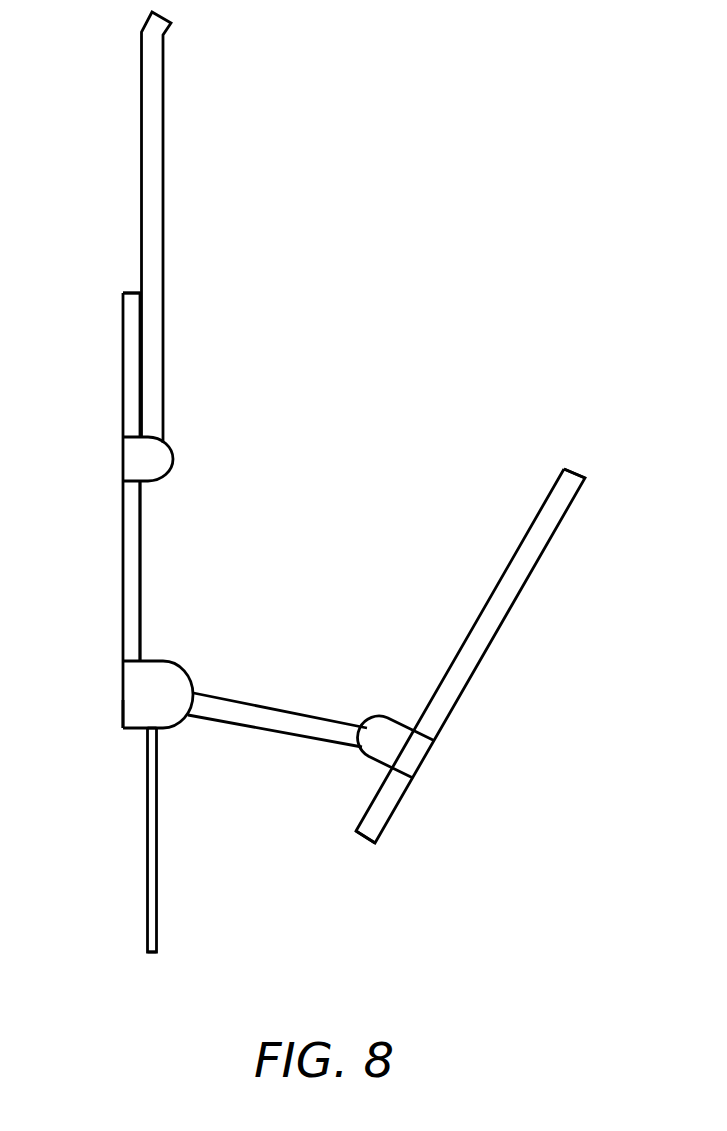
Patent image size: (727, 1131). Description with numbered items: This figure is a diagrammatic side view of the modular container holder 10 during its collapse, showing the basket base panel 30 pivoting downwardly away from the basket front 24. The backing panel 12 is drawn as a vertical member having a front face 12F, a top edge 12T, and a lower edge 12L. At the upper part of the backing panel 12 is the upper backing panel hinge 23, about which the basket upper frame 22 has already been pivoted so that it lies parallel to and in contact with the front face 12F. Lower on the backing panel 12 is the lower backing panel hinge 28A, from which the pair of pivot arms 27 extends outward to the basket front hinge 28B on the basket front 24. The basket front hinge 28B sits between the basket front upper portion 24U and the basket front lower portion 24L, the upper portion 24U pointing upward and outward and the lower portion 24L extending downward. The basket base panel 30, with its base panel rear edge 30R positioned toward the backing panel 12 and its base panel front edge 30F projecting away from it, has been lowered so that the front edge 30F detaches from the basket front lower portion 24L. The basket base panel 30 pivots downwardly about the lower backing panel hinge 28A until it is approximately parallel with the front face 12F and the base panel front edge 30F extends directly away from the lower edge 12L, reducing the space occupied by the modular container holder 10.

The modular container holder 10 is at (452, 813).
The backing panel 12 is at (138, 356).
The top edge 12T is at (122, 292).
The front face 12F is at (139, 607).
The lower edge 12L is at (122, 730).
The basket upper frame 22 is at (163, 135).
The upper backing panel hinge 23 is at (160, 463).
The basket front 24 is at (543, 551).
The basket front upper portion 24U is at (572, 469).
The basket front lower portion 24L is at (368, 841).
The pivot arms 27 is at (322, 710).
The lower backing panel hinge 28A is at (139, 713).
The basket front hinge 28B is at (410, 752).
The basket base panel 30 is at (147, 837).
The base panel rear edge 30R is at (155, 732).
The base panel front edge 30F is at (157, 953).